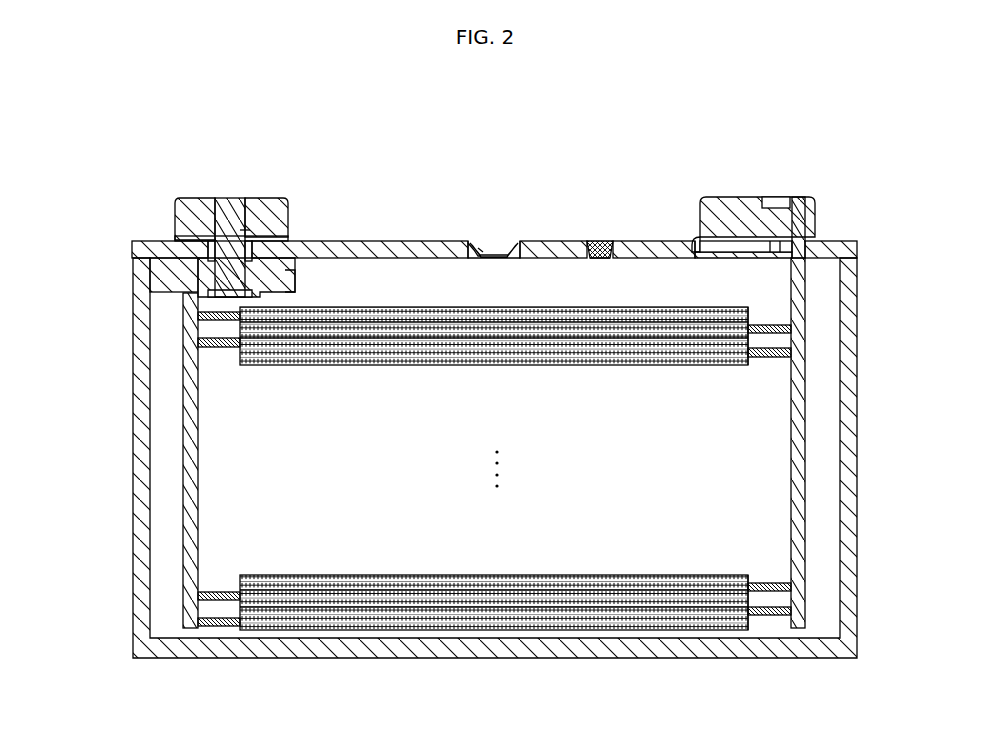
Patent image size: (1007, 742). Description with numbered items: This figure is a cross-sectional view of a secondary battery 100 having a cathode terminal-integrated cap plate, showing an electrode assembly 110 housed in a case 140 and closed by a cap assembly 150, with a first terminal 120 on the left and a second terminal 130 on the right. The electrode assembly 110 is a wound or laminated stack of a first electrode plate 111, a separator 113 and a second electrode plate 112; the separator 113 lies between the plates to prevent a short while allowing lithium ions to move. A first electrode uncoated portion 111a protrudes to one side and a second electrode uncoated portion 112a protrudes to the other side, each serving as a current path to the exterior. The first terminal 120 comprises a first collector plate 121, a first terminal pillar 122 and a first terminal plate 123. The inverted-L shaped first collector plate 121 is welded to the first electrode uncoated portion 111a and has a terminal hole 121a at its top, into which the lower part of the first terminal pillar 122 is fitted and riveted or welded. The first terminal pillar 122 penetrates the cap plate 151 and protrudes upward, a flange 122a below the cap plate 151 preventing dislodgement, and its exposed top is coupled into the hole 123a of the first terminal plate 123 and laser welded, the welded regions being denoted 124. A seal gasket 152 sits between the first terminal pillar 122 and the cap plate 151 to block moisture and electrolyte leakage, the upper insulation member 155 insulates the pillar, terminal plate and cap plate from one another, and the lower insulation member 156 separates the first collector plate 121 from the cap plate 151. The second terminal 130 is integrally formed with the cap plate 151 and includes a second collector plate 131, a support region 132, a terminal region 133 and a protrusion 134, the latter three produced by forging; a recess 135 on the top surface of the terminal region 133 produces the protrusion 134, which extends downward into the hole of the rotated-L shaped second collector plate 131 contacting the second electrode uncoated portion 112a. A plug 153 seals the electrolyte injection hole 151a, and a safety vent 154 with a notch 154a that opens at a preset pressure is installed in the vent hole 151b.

The secondary battery 100 is at (853, 80).
The electrode assembly 110 is at (487, 506).
The first electrode plate 111 is at (358, 631).
The first electrode uncoated portion 111a is at (222, 628).
The second electrode plate 112 is at (665, 631).
The second electrode uncoated portion 112a is at (770, 627).
The separator 113 is at (516, 591).
The first terminal 120 is at (199, 203).
The first collector plate 121 is at (186, 276).
The terminal hole 121a is at (218, 298).
The first terminal pillar 122 is at (196, 232).
The flange 122a is at (293, 272).
The first terminal plate 123 is at (272, 220).
The hole 123a is at (236, 232).
The welding regions 124 is at (225, 217).
The second terminal 130 is at (802, 359).
The second collector plate 131 is at (806, 325).
The support region 132 is at (695, 241).
The terminal region 133 is at (737, 212).
The protrusion 134 is at (804, 240).
The recess 135 is at (777, 202).
The case 140 is at (848, 357).
The cap assembly 150 is at (471, 236).
The cap plate 151 is at (412, 240).
The electrolyte injection hole 151a is at (598, 259).
The vent hole 151b is at (477, 259).
The seal gasket 152 is at (256, 252).
The plug 153 is at (600, 240).
The safety vent 154 is at (510, 251).
The notch 154a is at (482, 248).
The upper insulation member 155 is at (284, 241).
The lower insulation member 156 is at (158, 278).